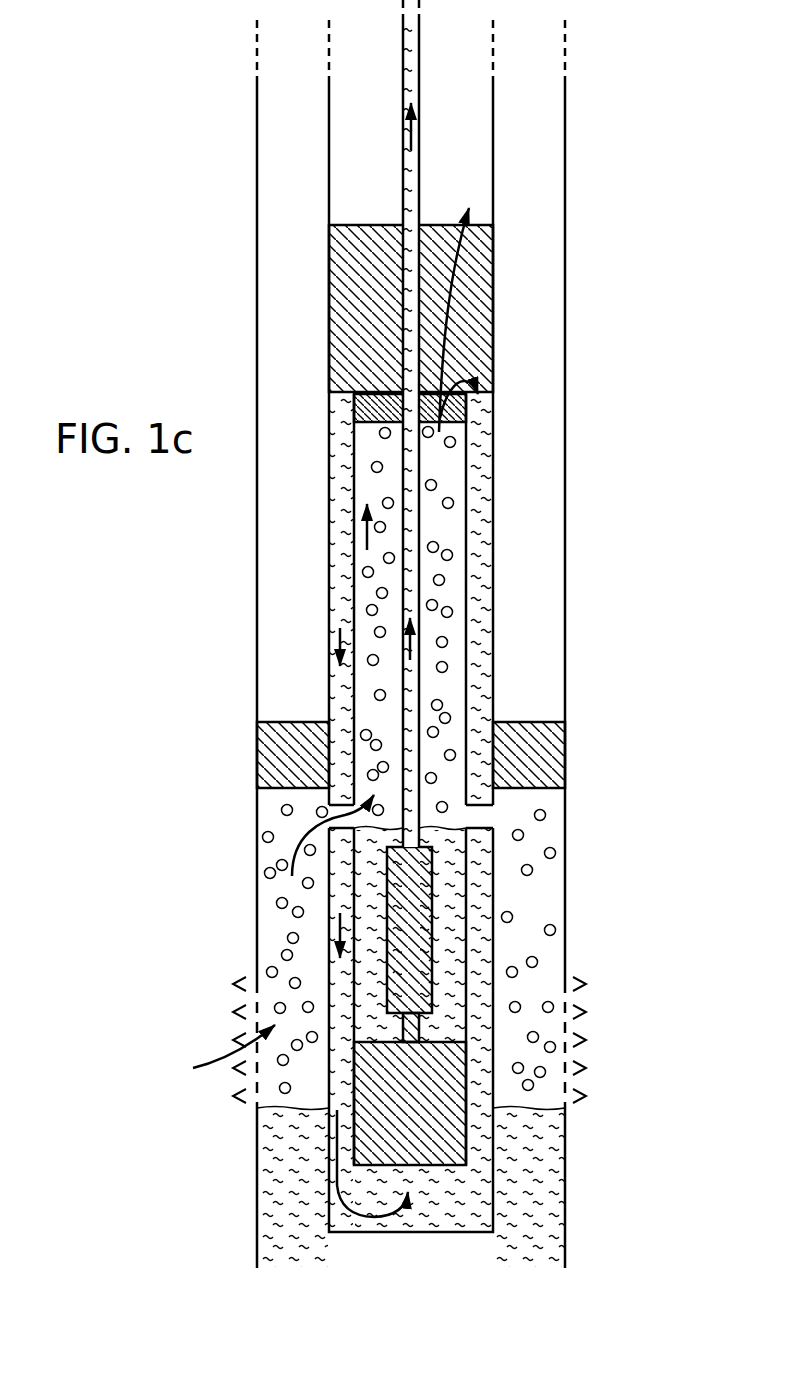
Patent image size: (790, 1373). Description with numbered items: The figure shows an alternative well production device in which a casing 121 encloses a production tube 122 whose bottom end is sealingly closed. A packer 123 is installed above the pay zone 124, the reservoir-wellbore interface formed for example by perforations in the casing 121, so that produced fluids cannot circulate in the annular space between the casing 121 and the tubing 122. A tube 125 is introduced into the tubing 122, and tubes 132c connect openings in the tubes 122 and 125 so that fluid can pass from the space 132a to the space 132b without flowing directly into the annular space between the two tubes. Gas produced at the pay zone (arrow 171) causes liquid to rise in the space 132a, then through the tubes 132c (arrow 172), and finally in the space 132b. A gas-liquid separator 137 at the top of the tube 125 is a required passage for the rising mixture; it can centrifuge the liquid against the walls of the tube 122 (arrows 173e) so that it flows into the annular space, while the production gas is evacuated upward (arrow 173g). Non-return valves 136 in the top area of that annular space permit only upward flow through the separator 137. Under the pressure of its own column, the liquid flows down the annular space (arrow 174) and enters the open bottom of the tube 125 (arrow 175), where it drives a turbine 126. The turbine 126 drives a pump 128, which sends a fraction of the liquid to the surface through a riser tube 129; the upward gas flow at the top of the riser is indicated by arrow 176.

The casing 121 is at (257, 124).
The production tube 122 is at (329, 196).
The packer 123 is at (281, 750).
The pay zone 124 is at (198, 1100).
The tube 125 is at (470, 543).
The turbine 126 is at (414, 1101).
The pump 128 is at (412, 917).
The riser tube 129 is at (421, 180).
The space 132a is at (532, 917).
The space 132b is at (445, 631).
The tubes 132c is at (477, 817).
The non-return valves 136 is at (472, 408).
The gas-liquid separator 137 is at (365, 285).
The arrow 171 is at (219, 1070).
The arrow 172 is at (297, 843).
The arrows 173e is at (481, 378).
The arrow 173g is at (462, 221).
The arrow 174 is at (338, 652).
The arrow 175 is at (338, 1192).
The gas outflow 176 is at (421, 126).